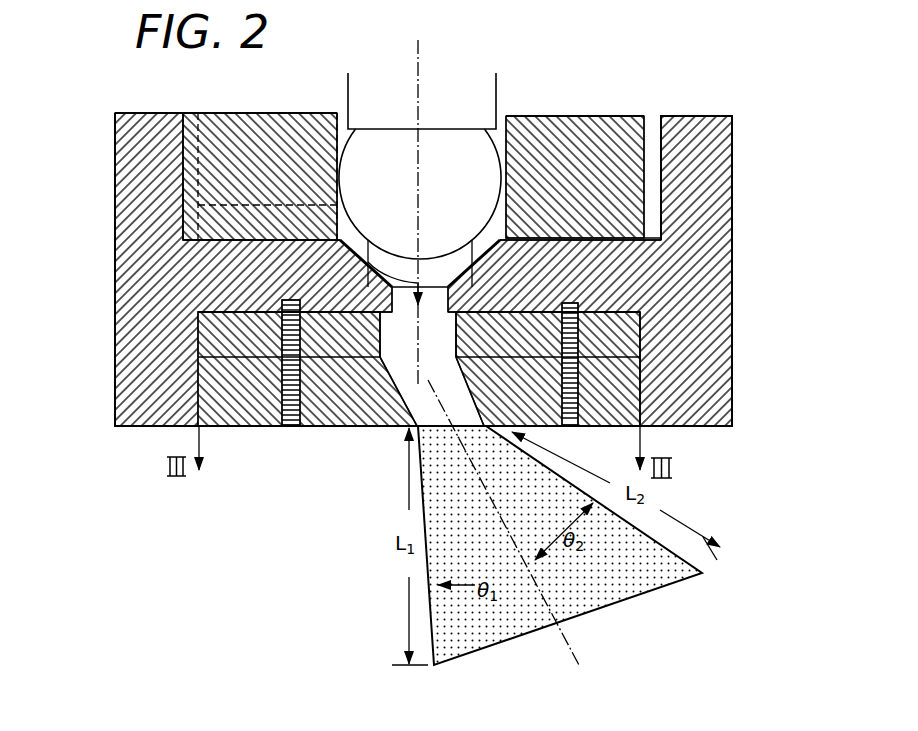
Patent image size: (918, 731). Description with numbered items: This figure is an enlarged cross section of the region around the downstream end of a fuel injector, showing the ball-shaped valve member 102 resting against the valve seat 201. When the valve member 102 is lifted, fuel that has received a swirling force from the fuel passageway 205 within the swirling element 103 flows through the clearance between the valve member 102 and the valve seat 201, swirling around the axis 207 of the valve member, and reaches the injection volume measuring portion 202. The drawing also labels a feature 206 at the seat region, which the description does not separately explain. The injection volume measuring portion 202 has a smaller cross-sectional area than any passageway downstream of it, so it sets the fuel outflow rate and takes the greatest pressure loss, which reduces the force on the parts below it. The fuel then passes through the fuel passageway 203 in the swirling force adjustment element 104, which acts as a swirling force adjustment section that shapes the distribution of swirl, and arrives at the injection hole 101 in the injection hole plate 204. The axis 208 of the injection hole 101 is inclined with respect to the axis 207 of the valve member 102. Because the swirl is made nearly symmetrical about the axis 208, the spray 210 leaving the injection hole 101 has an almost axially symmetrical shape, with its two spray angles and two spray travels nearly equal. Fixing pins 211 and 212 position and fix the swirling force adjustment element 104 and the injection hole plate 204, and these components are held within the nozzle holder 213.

The injection hole 101 is at (417, 427).
The valve member 102 is at (478, 175).
The swirling element 103 is at (575, 217).
The swirling force adjustment element 104 is at (610, 343).
The valve seat 201 is at (485, 243).
The injection volume measuring portion 202 is at (392, 287).
The fuel passageway 203 is at (380, 316).
The injection hole plate 204 is at (238, 427).
The fuel passageway 205 is at (245, 203).
The valve seat 206 is at (190, 243).
The axis of the valve member 207 is at (418, 85).
The axis of the injection hole 208 is at (514, 430).
The spray 210 is at (422, 498).
The fixing pin 211 is at (580, 400).
The fixing pin 212 is at (291, 426).
The nozzle holder 213 is at (667, 378).